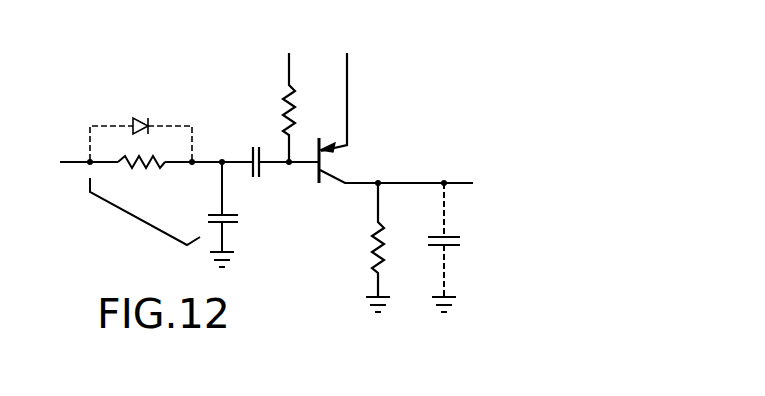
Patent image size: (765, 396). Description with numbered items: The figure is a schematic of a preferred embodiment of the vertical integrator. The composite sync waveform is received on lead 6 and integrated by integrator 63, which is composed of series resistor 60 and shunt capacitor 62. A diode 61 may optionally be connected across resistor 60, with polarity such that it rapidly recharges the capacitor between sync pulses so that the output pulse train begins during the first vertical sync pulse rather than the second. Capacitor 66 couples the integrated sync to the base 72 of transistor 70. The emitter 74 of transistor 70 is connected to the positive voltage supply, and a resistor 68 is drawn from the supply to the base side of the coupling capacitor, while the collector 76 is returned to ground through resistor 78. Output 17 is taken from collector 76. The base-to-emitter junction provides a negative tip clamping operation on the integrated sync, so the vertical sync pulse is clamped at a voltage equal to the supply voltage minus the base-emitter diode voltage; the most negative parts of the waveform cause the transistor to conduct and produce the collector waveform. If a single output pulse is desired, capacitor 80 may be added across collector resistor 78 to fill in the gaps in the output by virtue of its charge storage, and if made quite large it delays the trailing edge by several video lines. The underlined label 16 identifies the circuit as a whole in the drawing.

The lead 6 is at (78, 160).
The amplifier circuit 16 is at (281, 267).
The output 17 is at (462, 183).
The series resistor 60 is at (147, 169).
The diode 61 is at (138, 118).
The shunt capacitor 62 is at (208, 215).
The integrator 63 is at (133, 218).
The capacitor 66 is at (250, 156).
The bias resistor 68 is at (283, 105).
The transistor 70 is at (318, 151).
The base 72 is at (308, 165).
The emitter 74 is at (328, 153).
The collector 76 is at (337, 172).
The resistor 78 is at (382, 243).
The capacitor 80 is at (447, 250).